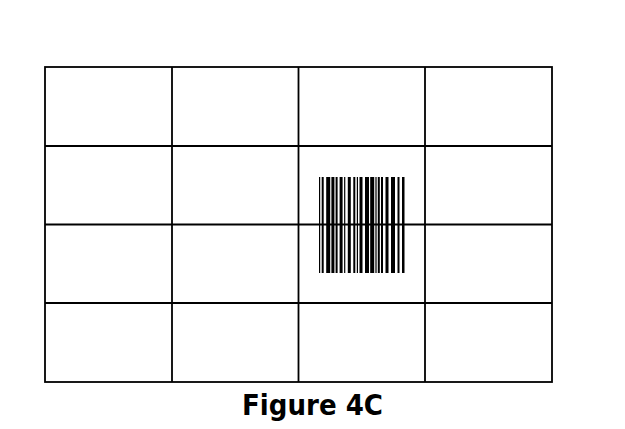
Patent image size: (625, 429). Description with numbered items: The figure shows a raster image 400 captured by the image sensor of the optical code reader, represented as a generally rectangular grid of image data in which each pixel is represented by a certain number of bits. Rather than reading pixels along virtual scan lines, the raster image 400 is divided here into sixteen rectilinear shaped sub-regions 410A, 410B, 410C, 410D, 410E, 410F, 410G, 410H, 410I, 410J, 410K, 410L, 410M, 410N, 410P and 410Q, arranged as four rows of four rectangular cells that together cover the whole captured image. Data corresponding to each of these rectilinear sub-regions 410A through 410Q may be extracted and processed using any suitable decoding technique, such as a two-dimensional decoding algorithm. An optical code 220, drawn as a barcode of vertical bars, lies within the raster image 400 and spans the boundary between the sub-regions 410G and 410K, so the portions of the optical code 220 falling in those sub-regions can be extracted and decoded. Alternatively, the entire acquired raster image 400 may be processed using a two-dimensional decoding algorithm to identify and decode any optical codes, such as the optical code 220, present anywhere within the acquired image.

The raster image 400 is at (290, 48).
The rectilinear shaped sub-region 410A is at (120, 89).
The rectilinear shaped sub-region 410B is at (247, 89).
The rectilinear shaped sub-region 410C is at (373, 89).
The rectilinear shaped sub-region 410D is at (499, 89).
The rectilinear shaped sub-region 410E is at (122, 168).
The rectilinear shaped sub-region 410F is at (249, 168).
The rectilinear shaped sub-region 410G is at (372, 167).
The rectilinear shaped sub-region 410H is at (499, 168).
The rectilinear shaped sub-region 410I is at (125, 246).
The rectilinear shaped sub-region 410J is at (249, 246).
The rectilinear shaped sub-region 410K is at (369, 298).
The rectilinear shaped sub-region 410L is at (501, 246).
The rectilinear shaped sub-region 410M is at (118, 326).
The rectilinear shaped sub-region 410N is at (246, 326).
The rectilinear shaped sub-region 410P is at (373, 326).
The rectilinear shaped sub-region 410Q is at (498, 326).
The optical code 220 is at (400, 198).